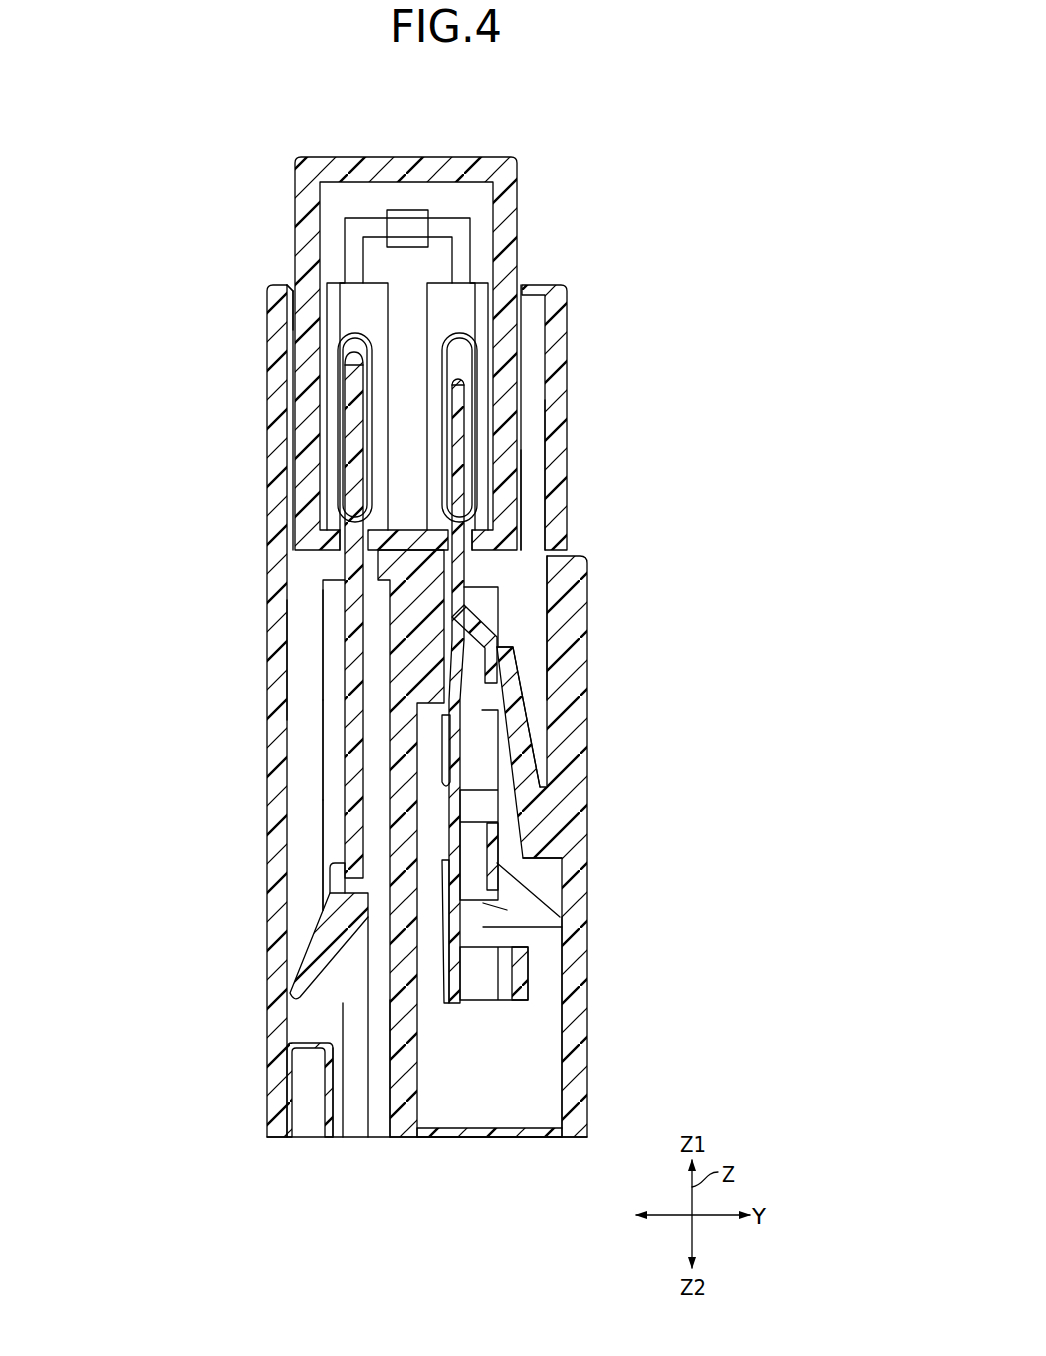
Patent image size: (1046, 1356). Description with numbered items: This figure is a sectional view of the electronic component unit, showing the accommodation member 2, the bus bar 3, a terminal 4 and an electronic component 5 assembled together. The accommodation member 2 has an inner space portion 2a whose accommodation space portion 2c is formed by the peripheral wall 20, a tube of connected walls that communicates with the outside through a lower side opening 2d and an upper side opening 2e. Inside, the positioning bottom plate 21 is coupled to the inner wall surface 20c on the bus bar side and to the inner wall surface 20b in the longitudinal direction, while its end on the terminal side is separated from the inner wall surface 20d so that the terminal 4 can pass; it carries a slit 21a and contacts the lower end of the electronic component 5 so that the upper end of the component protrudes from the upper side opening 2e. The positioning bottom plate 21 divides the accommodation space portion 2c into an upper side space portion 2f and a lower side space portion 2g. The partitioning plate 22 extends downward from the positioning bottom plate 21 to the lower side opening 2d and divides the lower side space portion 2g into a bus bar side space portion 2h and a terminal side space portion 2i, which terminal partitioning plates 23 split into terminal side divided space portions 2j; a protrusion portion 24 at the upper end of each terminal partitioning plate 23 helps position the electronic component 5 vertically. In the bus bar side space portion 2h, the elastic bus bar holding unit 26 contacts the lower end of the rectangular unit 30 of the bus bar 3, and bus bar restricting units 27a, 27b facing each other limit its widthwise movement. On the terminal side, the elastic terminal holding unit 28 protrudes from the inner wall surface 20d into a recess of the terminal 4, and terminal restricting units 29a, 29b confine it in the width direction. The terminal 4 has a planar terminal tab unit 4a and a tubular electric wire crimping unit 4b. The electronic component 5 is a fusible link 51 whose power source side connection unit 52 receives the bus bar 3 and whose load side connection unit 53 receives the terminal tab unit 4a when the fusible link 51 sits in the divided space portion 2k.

The electronic component 5 is at (458, 312).
The fusible link 51 is at (520, 152).
The power source side connection unit 52 is at (352, 360).
The load side connection unit 53 is at (459, 352).
The accommodation member 2 is at (438, 882).
The inner space portion 2a is at (531, 498).
The accommodation space portion 2c is at (325, 597).
The lower side opening 2d is at (512, 1140).
The upper side opening 2e is at (294, 290).
The upper side space portion 2f is at (537, 456).
The lower side space portion 2g is at (300, 688).
The bus bar side space portion 2h is at (332, 845).
The terminal side space portion 2i is at (522, 1050).
The terminal side divided space portion 2j is at (525, 577).
The divided space portion 2k is at (306, 276).
The bus bar 3 is at (275, 675).
The rectangular unit 30 is at (352, 441).
The bus bar holding unit 26 is at (312, 948).
The terminal 4 is at (564, 691).
The terminal tab unit 4a is at (467, 420).
The electric wire crimping unit 4b is at (500, 832).
The peripheral wall 20 is at (552, 328).
The inner wall surface 20b is at (297, 657).
The inner wall surface 20c is at (303, 323).
The inner wall surface 20d is at (537, 380).
The positioning bottom plate 21 is at (335, 580).
The slit 21a is at (345, 538).
The partitioning plate 22 is at (405, 820).
The terminal partitioning plate 23 is at (512, 1024).
The protrusion portion 24 is at (495, 540).
The bus bar restricting unit 27a is at (336, 1070).
The bus bar restricting unit 27b is at (382, 1085).
The terminal holding unit 28 is at (512, 748).
The terminal restricting unit 29a is at (428, 995).
The terminal restricting unit 29b is at (540, 878).